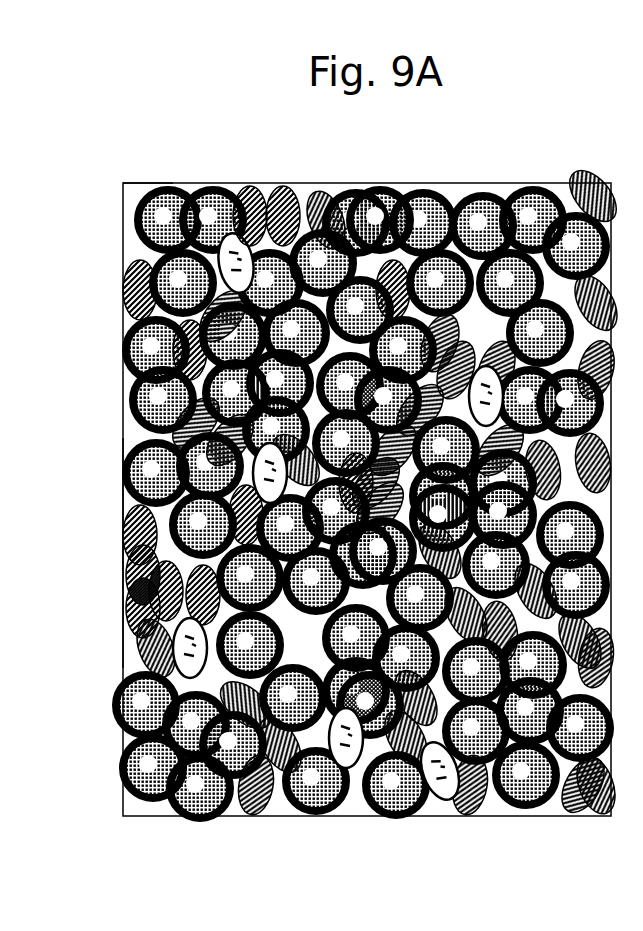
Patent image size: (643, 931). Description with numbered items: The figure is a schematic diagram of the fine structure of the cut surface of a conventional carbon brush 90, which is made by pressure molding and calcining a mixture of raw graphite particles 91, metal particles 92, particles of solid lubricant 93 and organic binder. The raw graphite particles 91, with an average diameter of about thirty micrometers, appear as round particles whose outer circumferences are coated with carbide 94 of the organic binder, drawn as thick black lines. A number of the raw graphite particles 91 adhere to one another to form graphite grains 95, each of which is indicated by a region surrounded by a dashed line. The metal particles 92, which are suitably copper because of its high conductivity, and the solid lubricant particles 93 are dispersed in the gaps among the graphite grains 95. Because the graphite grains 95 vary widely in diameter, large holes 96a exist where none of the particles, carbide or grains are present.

The carbon brush 90 is at (203, 845).
The raw graphite particles 91 is at (540, 205).
The metal particles 92 is at (300, 178).
The solid lubricant particles 93 is at (420, 808).
The carbide of the organic binder 94 is at (460, 178).
The graphite grains 95 is at (117, 186).
The large holes 96a is at (118, 432).